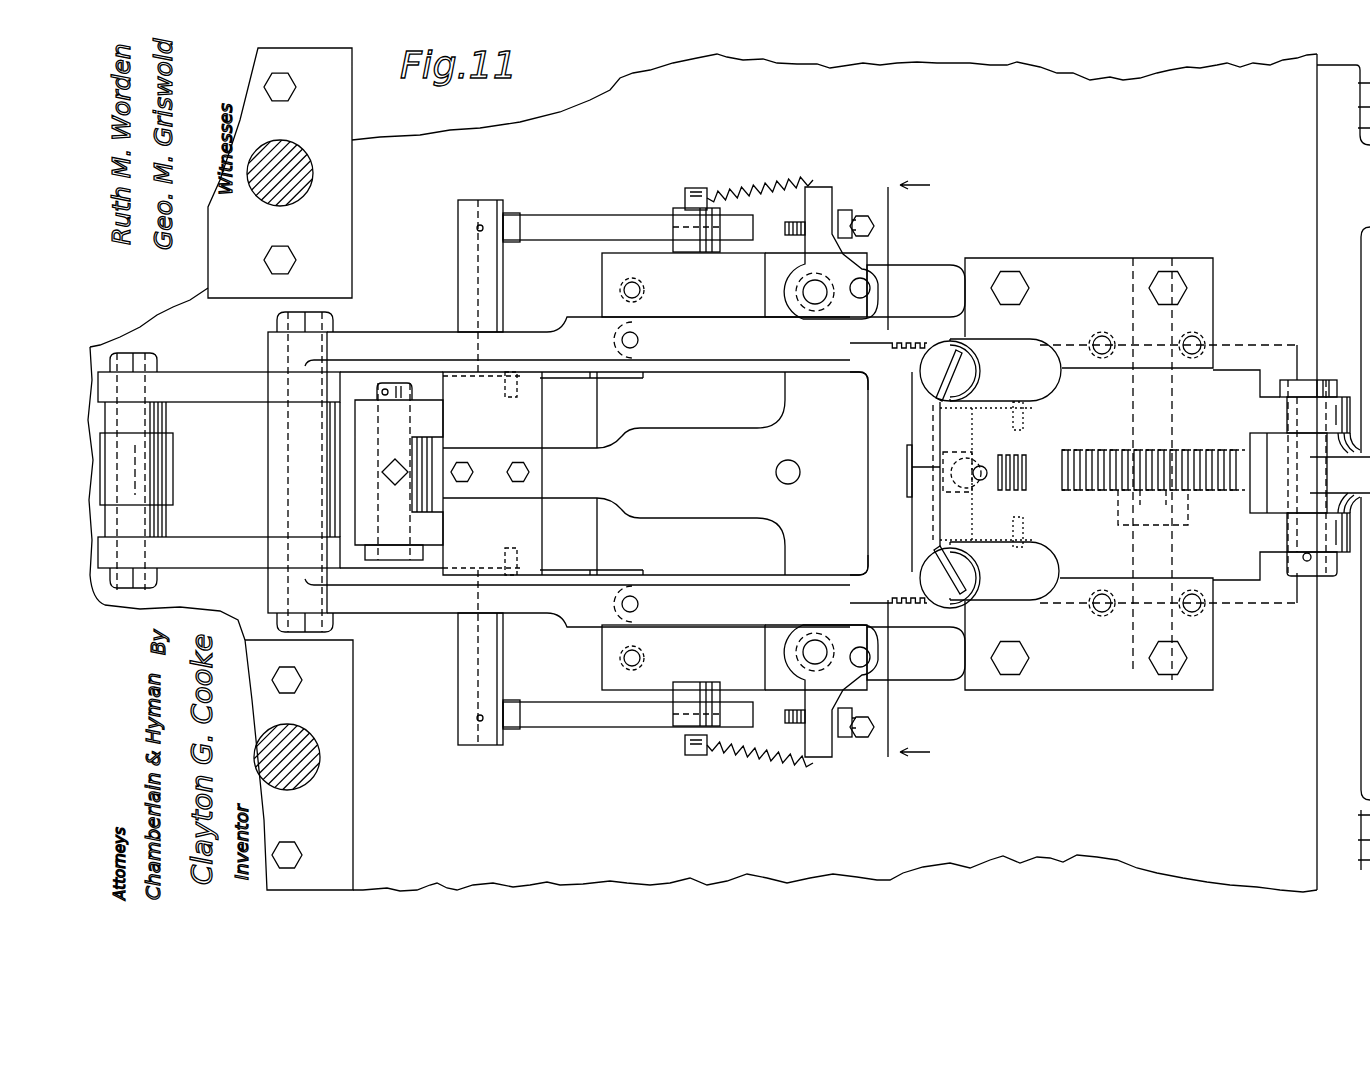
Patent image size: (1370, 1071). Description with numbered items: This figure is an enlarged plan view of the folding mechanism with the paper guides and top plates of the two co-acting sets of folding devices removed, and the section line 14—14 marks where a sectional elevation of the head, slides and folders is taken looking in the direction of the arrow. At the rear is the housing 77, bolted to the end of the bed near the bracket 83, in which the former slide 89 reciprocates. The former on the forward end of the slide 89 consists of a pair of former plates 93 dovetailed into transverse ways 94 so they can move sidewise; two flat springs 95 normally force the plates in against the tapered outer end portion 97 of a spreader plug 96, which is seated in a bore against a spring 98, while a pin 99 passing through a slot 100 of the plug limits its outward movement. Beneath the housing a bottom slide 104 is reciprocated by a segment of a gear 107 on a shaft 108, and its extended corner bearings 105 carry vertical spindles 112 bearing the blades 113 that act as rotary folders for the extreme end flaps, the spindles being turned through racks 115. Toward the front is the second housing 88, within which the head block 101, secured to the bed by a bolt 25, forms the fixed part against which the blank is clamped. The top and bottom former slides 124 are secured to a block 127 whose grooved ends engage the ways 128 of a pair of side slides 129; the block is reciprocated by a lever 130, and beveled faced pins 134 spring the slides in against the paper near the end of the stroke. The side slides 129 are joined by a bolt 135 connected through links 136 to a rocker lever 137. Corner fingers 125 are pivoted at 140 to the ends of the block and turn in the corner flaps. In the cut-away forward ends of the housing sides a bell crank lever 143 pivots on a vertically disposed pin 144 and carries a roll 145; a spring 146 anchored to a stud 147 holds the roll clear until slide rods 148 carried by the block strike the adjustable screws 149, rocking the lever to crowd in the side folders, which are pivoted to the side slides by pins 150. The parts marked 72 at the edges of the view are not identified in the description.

The side plate 72 is at (285, 160).
The slide rods 148 is at (577, 215).
The stud 147 is at (695, 253).
The bell crank lever 143 is at (803, 202).
The spring 146 is at (768, 190).
The adjustable screws 149 is at (860, 214).
The roll 145 is at (880, 272).
The section line 14 is at (898, 473).
The vertically disposed pin 144 is at (812, 300).
The second housing 88 is at (734, 657).
The racks 115 is at (924, 315).
The side slides 129 is at (406, 334).
The ways 128 is at (418, 614).
The vertically disposed pins 150 is at (640, 340).
The links 136 is at (270, 471).
The rocker lever 137 is at (175, 462).
The bolt 135 is at (300, 477).
The lever 130 is at (364, 460).
The top and bottom former slides 124 is at (655, 473).
The head block 101 is at (691, 536).
The block 127 is at (504, 473).
The corner fingers 125 is at (809, 372).
The beveled faced pins 134 is at (790, 460).
The pivot connection 140 is at (516, 386).
The corner bearings 105 is at (988, 340).
The blade 113 is at (921, 384).
The vertical spindles 112 is at (935, 612).
The flat springs 95 is at (998, 400).
The housing 77 is at (1089, 469).
The shaft 108 is at (1130, 620).
The bottom slide 104 is at (1232, 345).
The former plates 93 is at (912, 421).
The tapered outer end portion 97 is at (907, 462).
The spreader plug 96 is at (950, 476).
The slot 100 is at (962, 452).
The pin 99 is at (977, 445).
The transverse ways 94 is at (945, 525).
The spring 98 is at (1025, 458).
The former slide 89 is at (1153, 444).
The segment of a gear 107 is at (1195, 502).
The bolt 25 is at (1262, 583).
The bracket 83 is at (1317, 650).